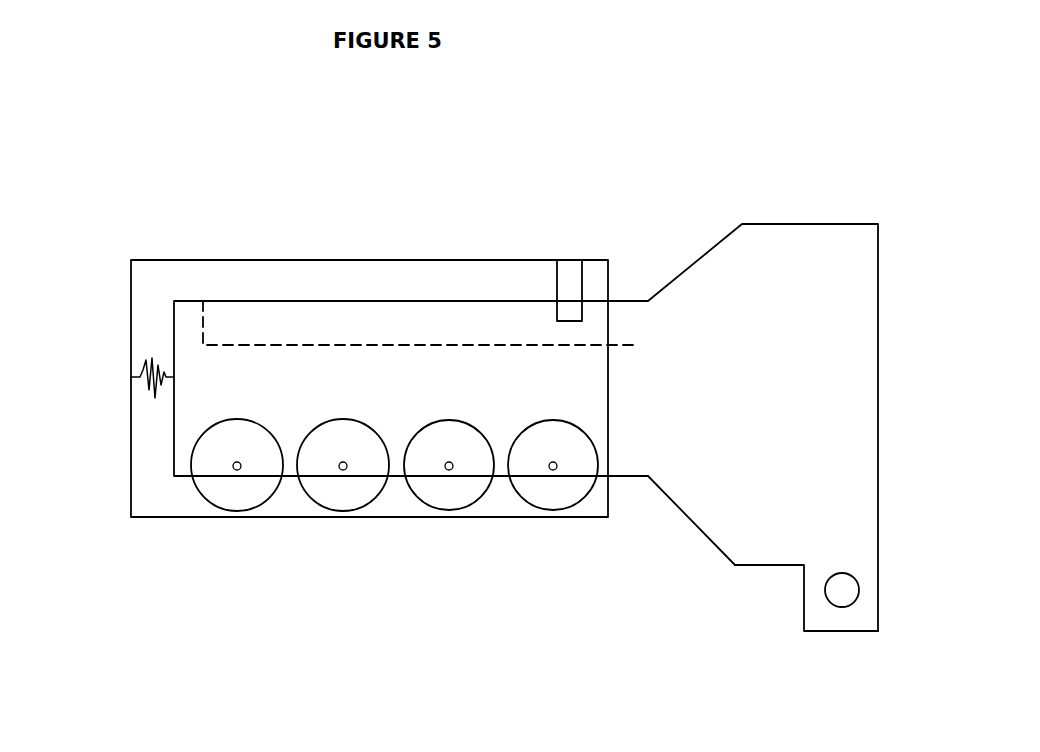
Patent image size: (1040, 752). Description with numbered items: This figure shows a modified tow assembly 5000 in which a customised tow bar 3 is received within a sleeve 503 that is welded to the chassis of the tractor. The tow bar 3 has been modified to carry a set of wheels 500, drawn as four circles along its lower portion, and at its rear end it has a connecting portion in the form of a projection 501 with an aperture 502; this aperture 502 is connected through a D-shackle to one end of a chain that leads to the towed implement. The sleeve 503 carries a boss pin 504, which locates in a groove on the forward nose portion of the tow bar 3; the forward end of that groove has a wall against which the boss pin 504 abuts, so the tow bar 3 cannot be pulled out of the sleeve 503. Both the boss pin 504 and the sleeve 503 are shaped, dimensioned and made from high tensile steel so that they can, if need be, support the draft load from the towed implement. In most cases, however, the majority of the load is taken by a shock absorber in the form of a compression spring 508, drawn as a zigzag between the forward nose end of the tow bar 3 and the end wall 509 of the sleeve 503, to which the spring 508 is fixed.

The tow assembly 5000 is at (504, 366).
The tow bar 3 is at (809, 422).
The set of wheels 500 is at (563, 490).
The projection 501 is at (820, 617).
The aperture 502 is at (848, 590).
The sleeve 503 is at (360, 272).
The boss pin 504 is at (566, 278).
The compression spring 508 is at (146, 414).
The end wall 509 is at (131, 278).